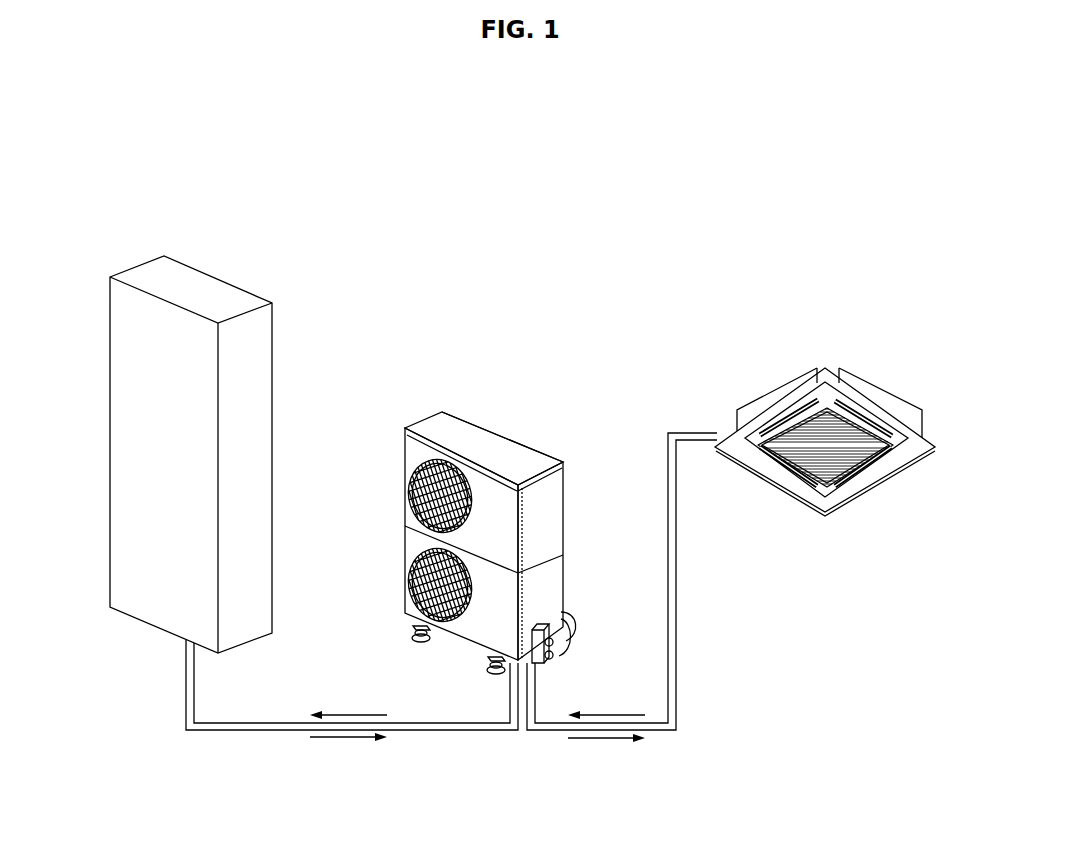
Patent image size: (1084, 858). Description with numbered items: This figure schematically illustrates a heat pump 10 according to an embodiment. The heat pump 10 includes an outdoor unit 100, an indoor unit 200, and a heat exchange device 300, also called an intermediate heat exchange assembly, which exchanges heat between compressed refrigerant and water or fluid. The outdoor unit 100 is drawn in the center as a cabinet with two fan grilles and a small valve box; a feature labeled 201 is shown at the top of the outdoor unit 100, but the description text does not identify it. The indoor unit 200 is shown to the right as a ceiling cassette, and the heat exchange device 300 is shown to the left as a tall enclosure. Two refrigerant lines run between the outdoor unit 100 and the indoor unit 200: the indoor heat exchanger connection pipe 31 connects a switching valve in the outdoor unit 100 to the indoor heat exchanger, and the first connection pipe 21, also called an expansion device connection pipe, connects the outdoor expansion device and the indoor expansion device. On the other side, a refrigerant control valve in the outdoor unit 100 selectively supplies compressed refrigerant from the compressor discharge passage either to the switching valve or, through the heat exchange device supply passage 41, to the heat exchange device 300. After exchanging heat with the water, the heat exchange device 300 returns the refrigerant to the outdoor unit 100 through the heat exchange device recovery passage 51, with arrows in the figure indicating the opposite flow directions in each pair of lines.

The heat pump 10 is at (91, 139).
The heat exchange device 300 is at (125, 255).
The outdoor unit 100 is at (415, 403).
The outdoor unit casing top 201 is at (508, 435).
The indoor unit 200 is at (771, 377).
The indoor heat exchanger connection pipe 31 is at (693, 433).
The first connection pipe 21 is at (676, 690).
The heat exchange device supply passage 41 is at (287, 722).
The heat exchange device recovery passage 51 is at (270, 732).